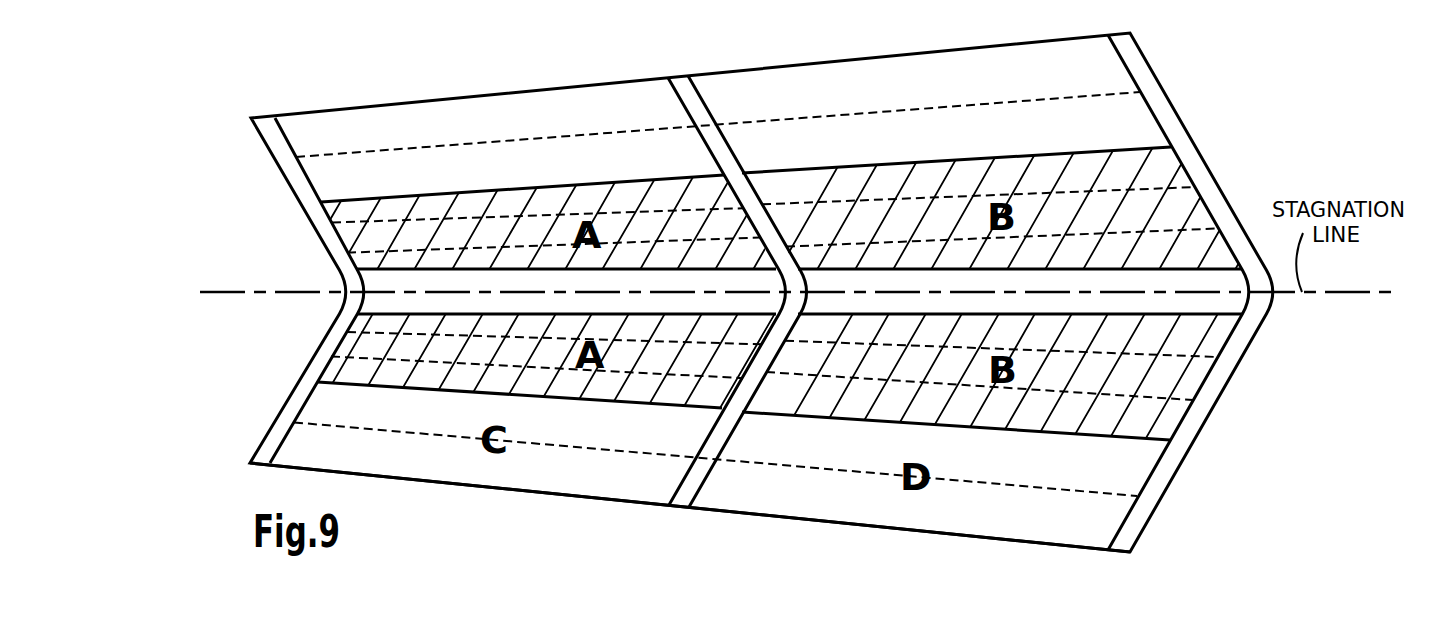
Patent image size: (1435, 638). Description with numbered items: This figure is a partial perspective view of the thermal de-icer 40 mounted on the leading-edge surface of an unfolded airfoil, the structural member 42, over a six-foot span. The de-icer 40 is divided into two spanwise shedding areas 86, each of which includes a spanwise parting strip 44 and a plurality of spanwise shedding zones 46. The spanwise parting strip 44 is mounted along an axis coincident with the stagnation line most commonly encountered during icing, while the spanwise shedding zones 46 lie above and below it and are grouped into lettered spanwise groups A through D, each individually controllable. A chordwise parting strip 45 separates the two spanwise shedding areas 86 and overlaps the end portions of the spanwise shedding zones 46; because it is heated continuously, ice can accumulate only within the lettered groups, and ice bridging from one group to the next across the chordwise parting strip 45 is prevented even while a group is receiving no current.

The de-icer 40 is at (448, 158).
The structural member 42 is at (513, 503).
The spanwise parting strip 44 is at (379, 280).
The chordwise parting strip 45 is at (660, 518).
The spanwise shedding zone 46 is at (357, 235).
The spanwise shedding area 86 is at (571, 170).